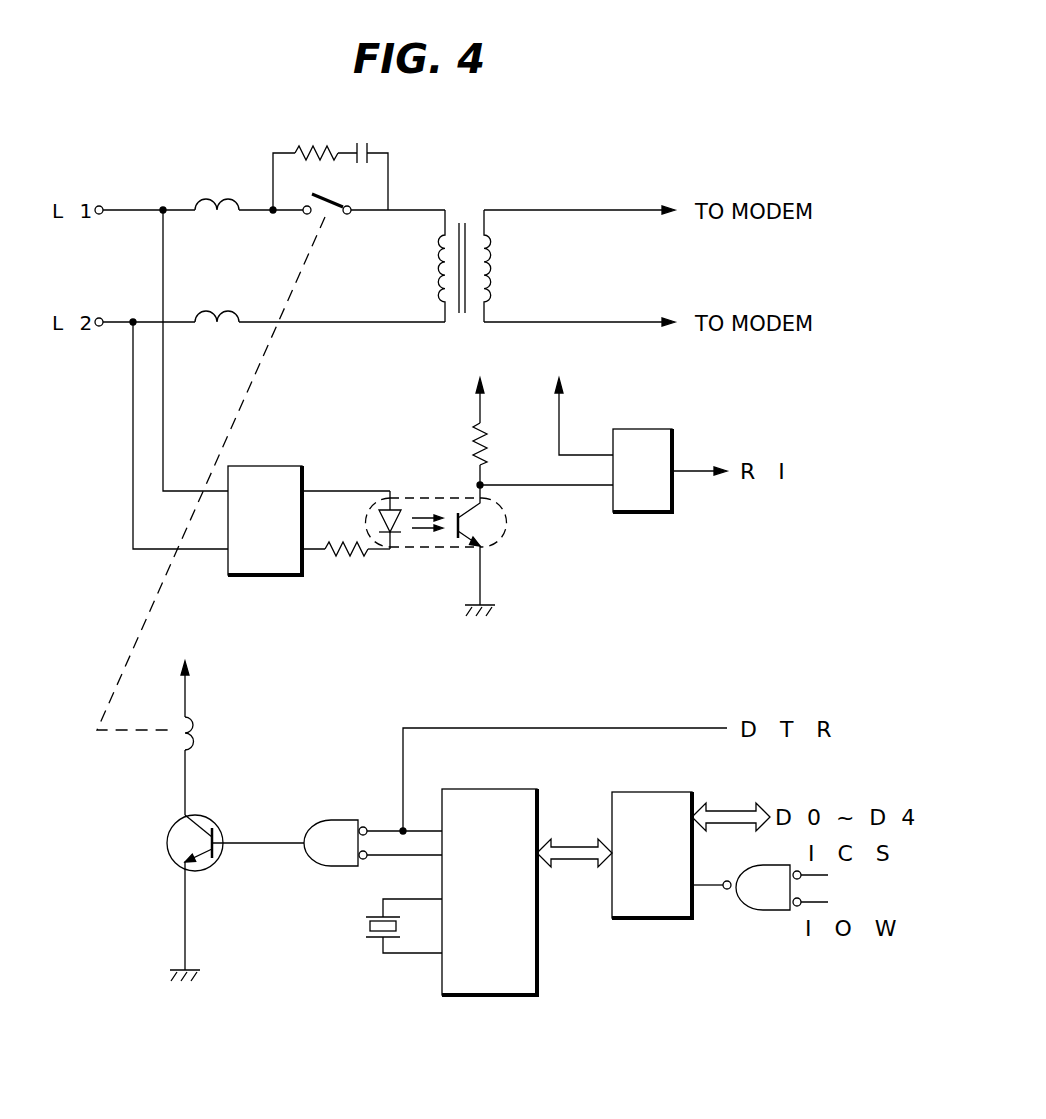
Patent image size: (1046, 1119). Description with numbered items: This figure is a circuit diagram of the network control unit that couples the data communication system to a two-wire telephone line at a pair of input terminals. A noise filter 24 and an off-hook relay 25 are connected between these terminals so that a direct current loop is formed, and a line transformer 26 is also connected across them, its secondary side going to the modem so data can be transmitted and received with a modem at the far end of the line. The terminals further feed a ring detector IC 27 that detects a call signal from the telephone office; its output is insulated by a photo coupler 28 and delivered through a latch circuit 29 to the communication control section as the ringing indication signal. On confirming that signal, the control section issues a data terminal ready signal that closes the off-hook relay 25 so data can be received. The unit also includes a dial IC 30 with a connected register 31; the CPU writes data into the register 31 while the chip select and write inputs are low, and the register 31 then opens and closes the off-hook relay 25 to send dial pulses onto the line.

The noise filter 24 is at (208, 200).
The off-hook relay 25 is at (343, 203).
The line transformer 26 is at (495, 250).
The ring detector IC 27 is at (263, 577).
The photo coupler 28 is at (425, 548).
The latch circuit 29 is at (640, 513).
The dial IC 30 is at (490, 997).
The register 31 is at (652, 920).